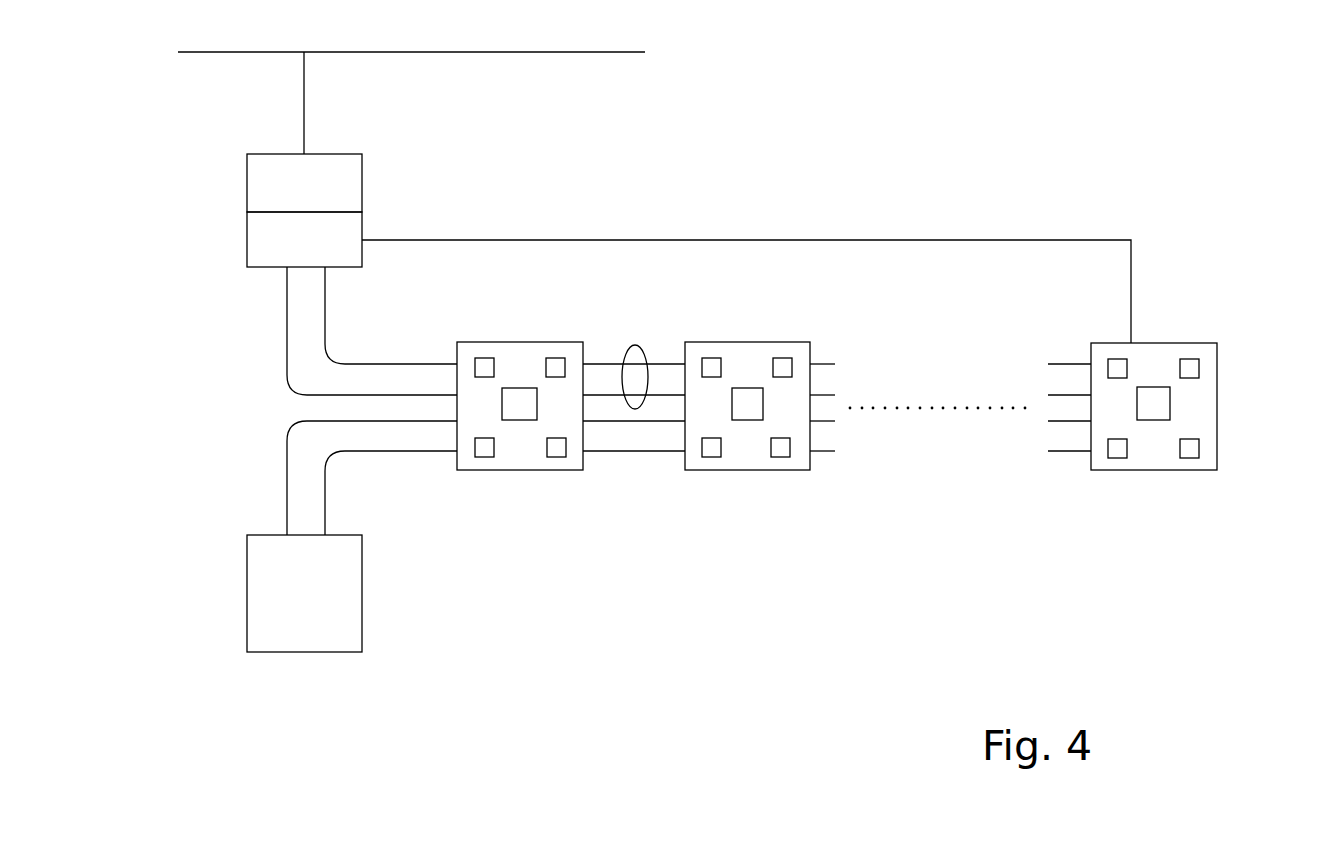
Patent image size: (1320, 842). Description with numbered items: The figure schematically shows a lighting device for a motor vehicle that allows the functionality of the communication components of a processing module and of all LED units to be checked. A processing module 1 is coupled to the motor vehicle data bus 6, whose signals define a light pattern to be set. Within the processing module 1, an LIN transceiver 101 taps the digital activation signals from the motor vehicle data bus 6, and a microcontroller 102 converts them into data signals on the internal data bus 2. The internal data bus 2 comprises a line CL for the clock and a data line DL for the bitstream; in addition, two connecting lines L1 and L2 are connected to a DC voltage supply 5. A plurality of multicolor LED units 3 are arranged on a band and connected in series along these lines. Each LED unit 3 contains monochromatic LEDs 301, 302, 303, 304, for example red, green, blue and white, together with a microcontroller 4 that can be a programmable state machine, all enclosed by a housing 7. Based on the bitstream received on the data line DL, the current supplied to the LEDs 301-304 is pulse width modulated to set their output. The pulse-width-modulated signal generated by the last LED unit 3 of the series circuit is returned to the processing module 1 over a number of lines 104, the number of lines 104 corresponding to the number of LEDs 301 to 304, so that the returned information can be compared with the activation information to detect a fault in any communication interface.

The processing module 1 is at (344, 159).
The LIN transceiver 101 is at (304, 183).
The microcontroller 102 is at (304, 239).
The lines 104 is at (927, 240).
The internal data bus 2 is at (639, 401).
The line for the clock CL is at (383, 362).
The data line DL is at (310, 394).
The connecting line L1 is at (285, 497).
The connecting line L2 is at (327, 483).
The multicolor LED unit 3 is at (513, 348).
The monochromatic LED 301 is at (487, 377).
The monochromatic LED 302 is at (550, 355).
The monochromatic LED 303 is at (487, 457).
The monochromatic LED 304 is at (557, 457).
The microcontroller 4 is at (537, 405).
The DC voltage supply 5 is at (362, 592).
The motor vehicle data bus 6 is at (552, 52).
The housing 7 is at (575, 476).